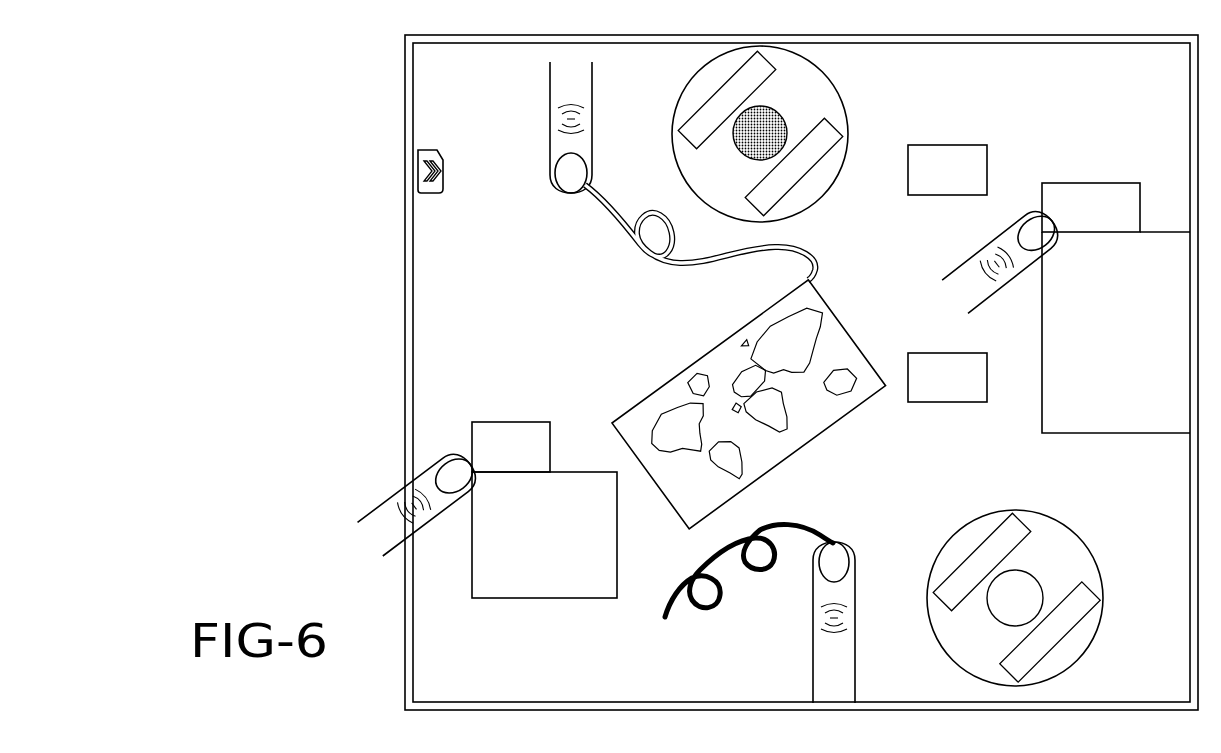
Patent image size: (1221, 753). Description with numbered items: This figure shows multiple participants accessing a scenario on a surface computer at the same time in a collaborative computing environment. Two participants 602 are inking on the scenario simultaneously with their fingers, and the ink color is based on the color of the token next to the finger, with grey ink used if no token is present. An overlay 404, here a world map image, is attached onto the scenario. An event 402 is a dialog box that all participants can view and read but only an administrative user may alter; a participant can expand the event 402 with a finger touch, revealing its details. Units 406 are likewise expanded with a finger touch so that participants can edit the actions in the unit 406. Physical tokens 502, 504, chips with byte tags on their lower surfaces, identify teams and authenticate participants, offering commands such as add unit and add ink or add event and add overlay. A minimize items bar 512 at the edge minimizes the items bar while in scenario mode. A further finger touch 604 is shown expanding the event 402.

The event 402 is at (1090, 183).
The overlay 404 is at (700, 358).
The unit 406 is at (947, 145).
The physical token 502 is at (778, 111).
The physical token 504 is at (1033, 569).
The minimize items bar 512 is at (444, 174).
The participant 602 is at (551, 97).
The finger touch selection 604 is at (993, 237).